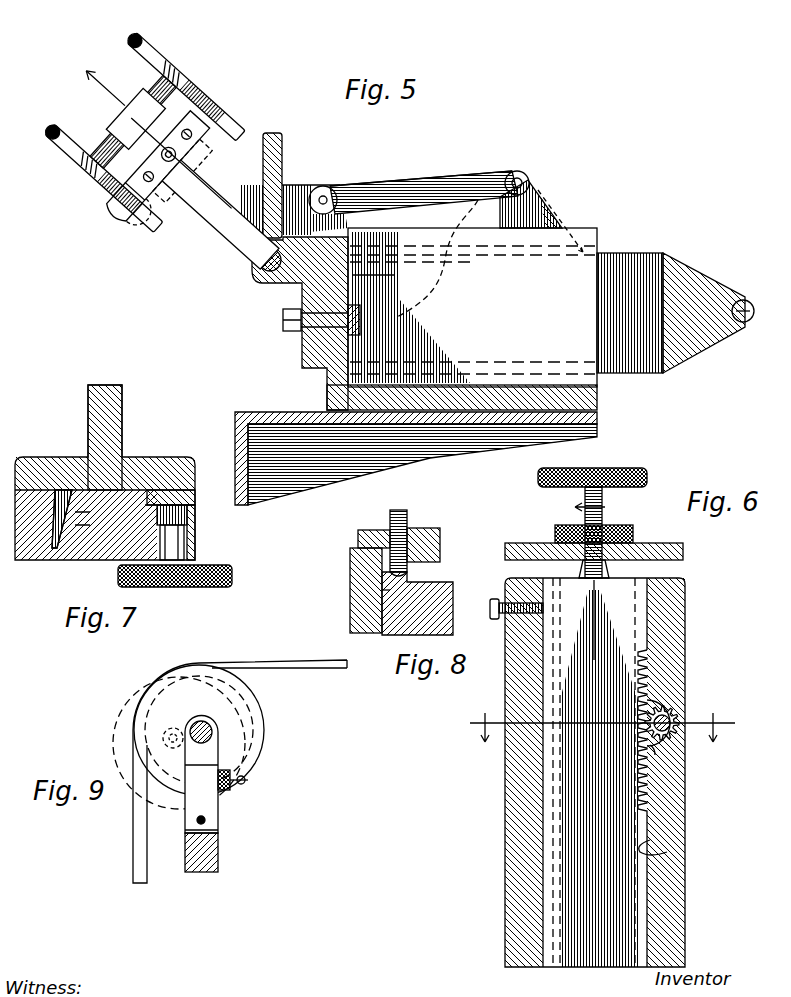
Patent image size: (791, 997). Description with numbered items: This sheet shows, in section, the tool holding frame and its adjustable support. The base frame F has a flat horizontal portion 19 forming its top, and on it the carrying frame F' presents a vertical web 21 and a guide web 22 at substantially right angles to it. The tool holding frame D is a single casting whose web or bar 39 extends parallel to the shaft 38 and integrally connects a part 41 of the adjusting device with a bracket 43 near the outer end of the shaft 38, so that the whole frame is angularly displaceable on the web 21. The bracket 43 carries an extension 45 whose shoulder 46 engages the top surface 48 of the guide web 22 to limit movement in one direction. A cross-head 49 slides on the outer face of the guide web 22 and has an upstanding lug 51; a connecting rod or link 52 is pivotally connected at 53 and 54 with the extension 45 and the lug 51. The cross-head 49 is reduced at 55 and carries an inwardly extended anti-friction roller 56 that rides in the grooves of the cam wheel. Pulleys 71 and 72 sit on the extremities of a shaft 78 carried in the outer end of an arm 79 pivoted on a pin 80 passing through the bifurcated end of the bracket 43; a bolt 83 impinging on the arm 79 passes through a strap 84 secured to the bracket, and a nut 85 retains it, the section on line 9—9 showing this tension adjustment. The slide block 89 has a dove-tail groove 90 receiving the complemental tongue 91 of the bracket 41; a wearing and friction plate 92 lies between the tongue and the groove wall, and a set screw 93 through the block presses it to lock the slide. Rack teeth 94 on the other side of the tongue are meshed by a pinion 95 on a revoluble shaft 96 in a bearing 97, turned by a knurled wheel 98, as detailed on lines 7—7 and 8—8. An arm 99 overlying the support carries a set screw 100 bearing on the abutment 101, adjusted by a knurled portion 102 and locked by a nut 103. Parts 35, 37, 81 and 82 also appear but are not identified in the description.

In FIG. 5, the section line 9— 9 is at (149, 133).
In FIG. 5, the flat horizontal portion 19 is at (205, 195).
In FIG. 5, the vertical web 21 is at (373, 285).
In FIG. 5, the guide web 22 is at (528, 236).
In FIG. 5, the base block 35 is at (360, 322).
In FIG. 5, the arm 37 is at (256, 264).
In FIG. 5, the shaft 38 is at (262, 278).
In FIG. 5, the web or bar 39 is at (283, 146).
In FIG. 7, the web or bar 39 is at (122, 396).
In FIG. 7, the part of adjusting device 41 is at (47, 460).
In FIG. 5, the bracket 43 is at (252, 185).
In FIG. 9, the bracket 43 is at (218, 862).
In FIG. 5, the extension 45 is at (320, 186).
In FIG. 5, the shoulder 46 is at (380, 178).
In FIG. 5, the top surface 48 is at (432, 218).
In FIG. 5, the cross-head 49 is at (612, 262).
In FIG. 5, the upstanding lug 51 is at (540, 190).
In FIG. 5, the connecting rod or link 52 is at (422, 180).
In FIG. 5, the pivot connection 53 is at (340, 210).
In FIG. 5, the pivot connection 54 is at (518, 170).
In FIG. 5, the reduced portion 55 is at (700, 292).
In FIG. 5, the anti-friction roller 56 is at (747, 300).
In FIG. 5, the pulley 71 is at (62, 160).
In FIG. 5, the pulley 72 is at (160, 45).
In FIG. 5, the shaft 78 is at (110, 145).
In FIG. 9, the shaft 78 is at (210, 722).
In FIG. 5, the arm 79 is at (134, 108).
In FIG. 9, the arm 79 is at (210, 745).
In FIG. 5, the pin 80 is at (180, 215).
In FIG. 9, the pin 80 is at (197, 820).
In FIG. 5, the plate 81 is at (148, 236).
In FIG. 9, the plate 81 is at (220, 834).
In FIG. 9, the band 82 is at (200, 668).
In FIG. 5, the bolt 83 is at (178, 158).
In FIG. 9, the bolt 83 is at (238, 778).
In FIG. 5, the strap 84 is at (218, 112).
In FIG. 9, the strap 84 is at (228, 770).
In FIG. 9, the nut 85 is at (242, 783).
In FIG. 7, the slide block 89 is at (33, 560).
In FIG. 8, the slide block 89 is at (350, 598).
In FIG. 6, the slide block 89 is at (685, 672).
In FIG. 7, the dove-tail slot or groove 90 is at (78, 545).
In FIG. 8, the dove-tail slot or groove 90 is at (385, 612).
In FIG. 6, the dove-tail slot or groove 90 is at (667, 852).
In FIG. 7, the tongue 91 is at (128, 500).
In FIG. 8, the tongue 91 is at (438, 600).
In FIG. 6, the tongue 91 is at (620, 626).
In FIG. 7, the wearing and friction plate 92 is at (50, 560).
In FIG. 6, the wearing and friction plate 92 is at (543, 670).
In FIG. 6, the set screw 93 is at (494, 600).
In FIG. 6, the rack teeth 94 is at (638, 668).
In FIG. 6, the pinion 95 is at (678, 718).
In FIG. 7, the revoluble shaft 96 is at (190, 546).
In FIG. 6, the revoluble shaft 96 is at (685, 745).
In FIG. 7, the bearing 97 is at (118, 560).
In FIG. 7, the knurled wheel 98 is at (185, 587).
In FIG. 8, the arm 99 is at (440, 540).
In FIG. 6, the arm 99 is at (683, 552).
In FIG. 8, the set screw 100 is at (390, 520).
In FIG. 6, the set screw 100 is at (605, 498).
In FIG. 8, the abutment 101 is at (408, 575).
In FIG. 6, the abutment 101 is at (578, 576).
In FIG. 6, the knurled portion 102 is at (647, 477).
In FIG. 8, the nut 103 is at (358, 538).
In FIG. 6, the nut 103 is at (633, 535).
In FIG. 6, the section line 7— 7 is at (600, 727).
In FIG. 6, the section line 8— 8 is at (590, 499).